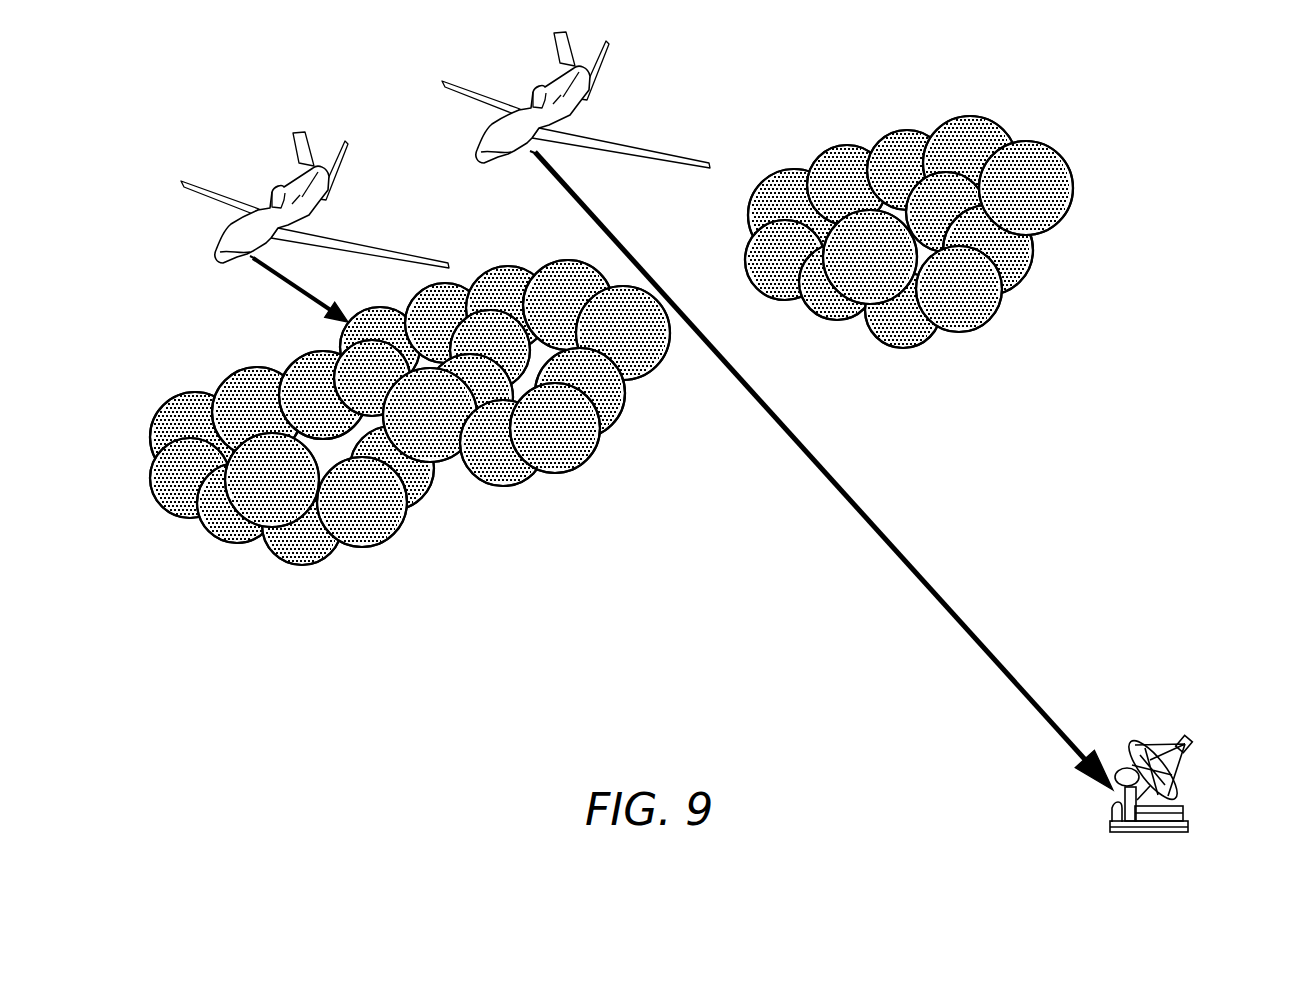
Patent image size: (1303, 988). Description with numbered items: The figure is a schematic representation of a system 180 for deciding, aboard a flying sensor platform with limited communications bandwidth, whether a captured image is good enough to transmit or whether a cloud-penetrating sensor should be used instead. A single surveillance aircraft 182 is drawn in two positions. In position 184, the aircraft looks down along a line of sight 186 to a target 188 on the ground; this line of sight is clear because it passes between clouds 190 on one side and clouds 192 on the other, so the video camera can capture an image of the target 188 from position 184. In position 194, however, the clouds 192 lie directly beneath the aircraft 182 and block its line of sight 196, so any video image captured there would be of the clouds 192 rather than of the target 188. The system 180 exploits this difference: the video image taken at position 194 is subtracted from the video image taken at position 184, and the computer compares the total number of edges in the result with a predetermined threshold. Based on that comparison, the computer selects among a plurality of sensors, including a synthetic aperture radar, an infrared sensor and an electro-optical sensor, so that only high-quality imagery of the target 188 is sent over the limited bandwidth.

The system 180 is at (701, 511).
The surveillance aircraft 182 is at (226, 226).
The position 184 is at (533, 152).
The line of sight 186 is at (878, 523).
The target 188 is at (1192, 825).
The clouds 190 is at (968, 317).
The clouds 192 is at (373, 535).
The position 194 is at (253, 257).
The line of sight 196 is at (297, 278).